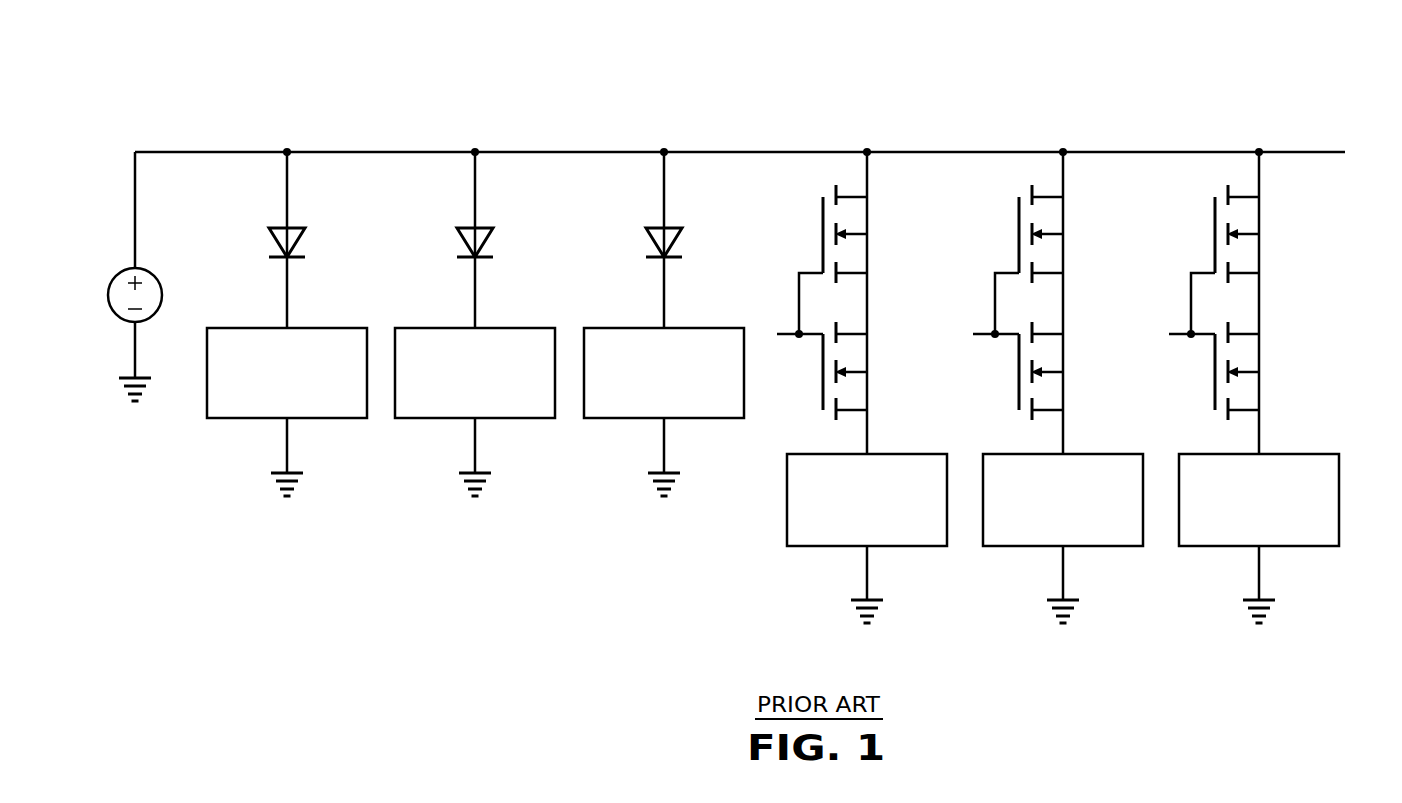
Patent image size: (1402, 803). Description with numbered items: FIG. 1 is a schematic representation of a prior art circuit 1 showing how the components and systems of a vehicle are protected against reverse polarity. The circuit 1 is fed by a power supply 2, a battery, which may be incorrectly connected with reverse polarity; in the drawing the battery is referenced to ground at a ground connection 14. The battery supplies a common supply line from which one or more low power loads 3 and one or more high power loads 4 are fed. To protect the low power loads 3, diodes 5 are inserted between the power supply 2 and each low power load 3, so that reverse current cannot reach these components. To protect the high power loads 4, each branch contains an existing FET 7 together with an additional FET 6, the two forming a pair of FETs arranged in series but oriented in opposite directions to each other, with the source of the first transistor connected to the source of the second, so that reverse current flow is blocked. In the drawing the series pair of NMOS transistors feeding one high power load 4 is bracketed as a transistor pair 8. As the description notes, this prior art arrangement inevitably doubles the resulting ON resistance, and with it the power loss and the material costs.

The circuit 1 is at (1290, 88).
The power supply 2 is at (122, 316).
The low power loads 3 is at (245, 420).
The high power loads 4 is at (824, 548).
The diodes 5 is at (308, 246).
The additional FET 6 is at (912, 235).
The existing FET 7 is at (823, 358).
The transistor pair (back-to-back NMOS) 8 is at (1335, 172).
The ground connection 14 is at (142, 361).